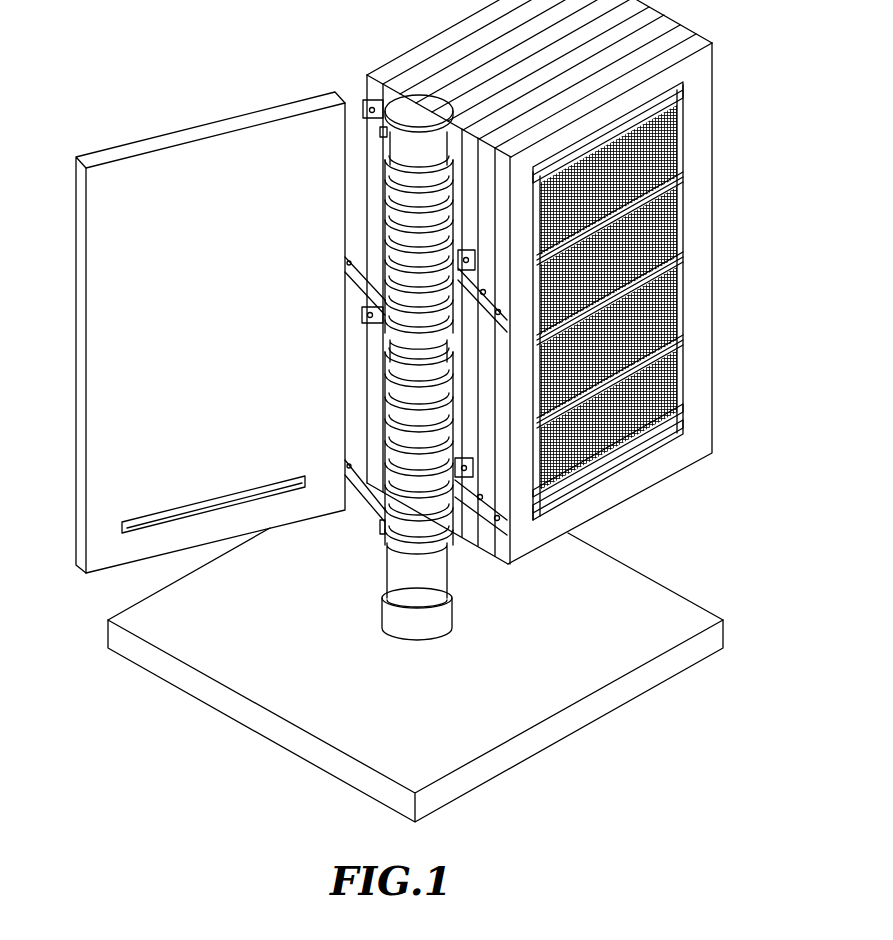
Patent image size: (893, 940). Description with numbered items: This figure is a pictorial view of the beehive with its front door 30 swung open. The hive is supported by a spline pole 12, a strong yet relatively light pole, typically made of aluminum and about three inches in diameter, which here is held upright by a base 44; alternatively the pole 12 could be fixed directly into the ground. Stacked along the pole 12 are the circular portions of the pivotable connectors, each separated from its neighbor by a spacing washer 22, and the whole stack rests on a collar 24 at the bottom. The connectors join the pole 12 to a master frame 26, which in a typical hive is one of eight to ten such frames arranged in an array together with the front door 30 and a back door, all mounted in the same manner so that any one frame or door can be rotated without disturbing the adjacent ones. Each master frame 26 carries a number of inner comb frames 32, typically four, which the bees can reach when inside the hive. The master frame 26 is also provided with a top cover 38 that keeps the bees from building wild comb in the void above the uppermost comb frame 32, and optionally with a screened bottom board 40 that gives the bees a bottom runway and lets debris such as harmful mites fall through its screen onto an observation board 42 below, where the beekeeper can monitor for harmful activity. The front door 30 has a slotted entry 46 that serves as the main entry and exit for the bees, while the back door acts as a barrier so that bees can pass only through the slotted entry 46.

The spline pole 12 is at (405, 150).
The spacing washer 22 is at (415, 192).
The collar 24 is at (386, 538).
The master frame 26 is at (712, 421).
The front door 30 is at (97, 465).
The inner comb frame 32 is at (657, 160).
The top cover 38 is at (688, 88).
The screened bottom board 40 is at (632, 453).
The observation board 42 is at (665, 443).
The base 44 is at (553, 733).
The slotted entry 46 is at (155, 520).